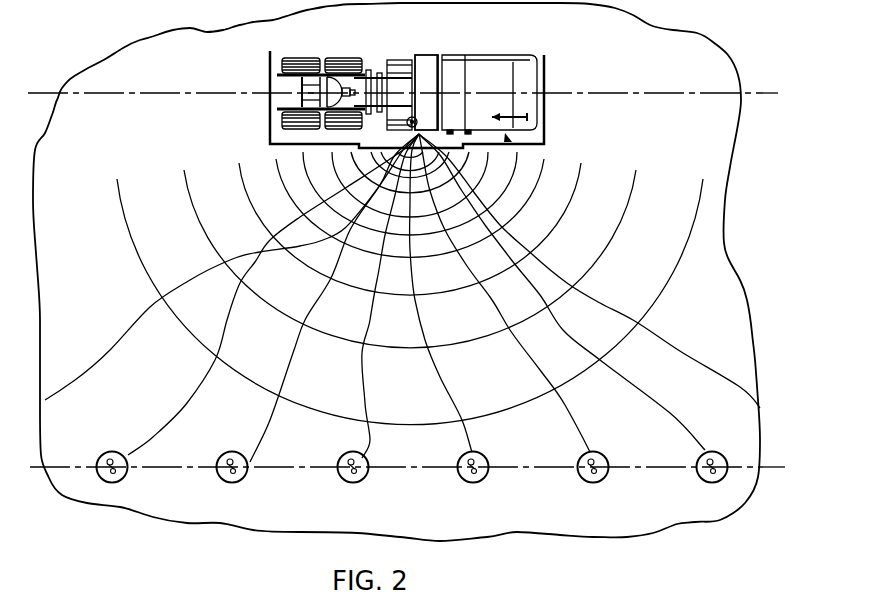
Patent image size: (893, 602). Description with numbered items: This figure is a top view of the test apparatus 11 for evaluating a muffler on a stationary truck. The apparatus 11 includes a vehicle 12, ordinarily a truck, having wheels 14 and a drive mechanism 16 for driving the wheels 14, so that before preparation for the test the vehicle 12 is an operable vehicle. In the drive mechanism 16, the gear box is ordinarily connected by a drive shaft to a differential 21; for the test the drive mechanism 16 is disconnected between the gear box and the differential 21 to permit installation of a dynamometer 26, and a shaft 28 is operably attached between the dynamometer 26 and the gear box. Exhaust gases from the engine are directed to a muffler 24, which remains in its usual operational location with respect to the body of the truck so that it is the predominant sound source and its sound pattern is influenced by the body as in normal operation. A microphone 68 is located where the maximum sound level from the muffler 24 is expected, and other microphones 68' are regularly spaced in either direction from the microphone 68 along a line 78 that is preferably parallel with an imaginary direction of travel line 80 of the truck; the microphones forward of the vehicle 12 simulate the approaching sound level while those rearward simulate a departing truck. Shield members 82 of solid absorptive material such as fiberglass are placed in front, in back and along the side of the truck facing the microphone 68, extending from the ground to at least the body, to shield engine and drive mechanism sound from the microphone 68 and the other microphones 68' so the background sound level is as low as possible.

The apparatus 11 is at (580, 54).
The vehicle 12 is at (467, 57).
The wheels 14 is at (333, 57).
The drive mechanism 16 is at (346, 93).
The differential 21 is at (344, 96).
The muffler 24 is at (417, 121).
The dynamometer 26 is at (370, 84).
The shaft 28 is at (404, 86).
The microphone 68 is at (351, 483).
The other microphones 68' is at (398, 455).
The line 78 is at (420, 470).
The imaginary direction of travel line 80 is at (227, 93).
The shield members 82 is at (546, 120).